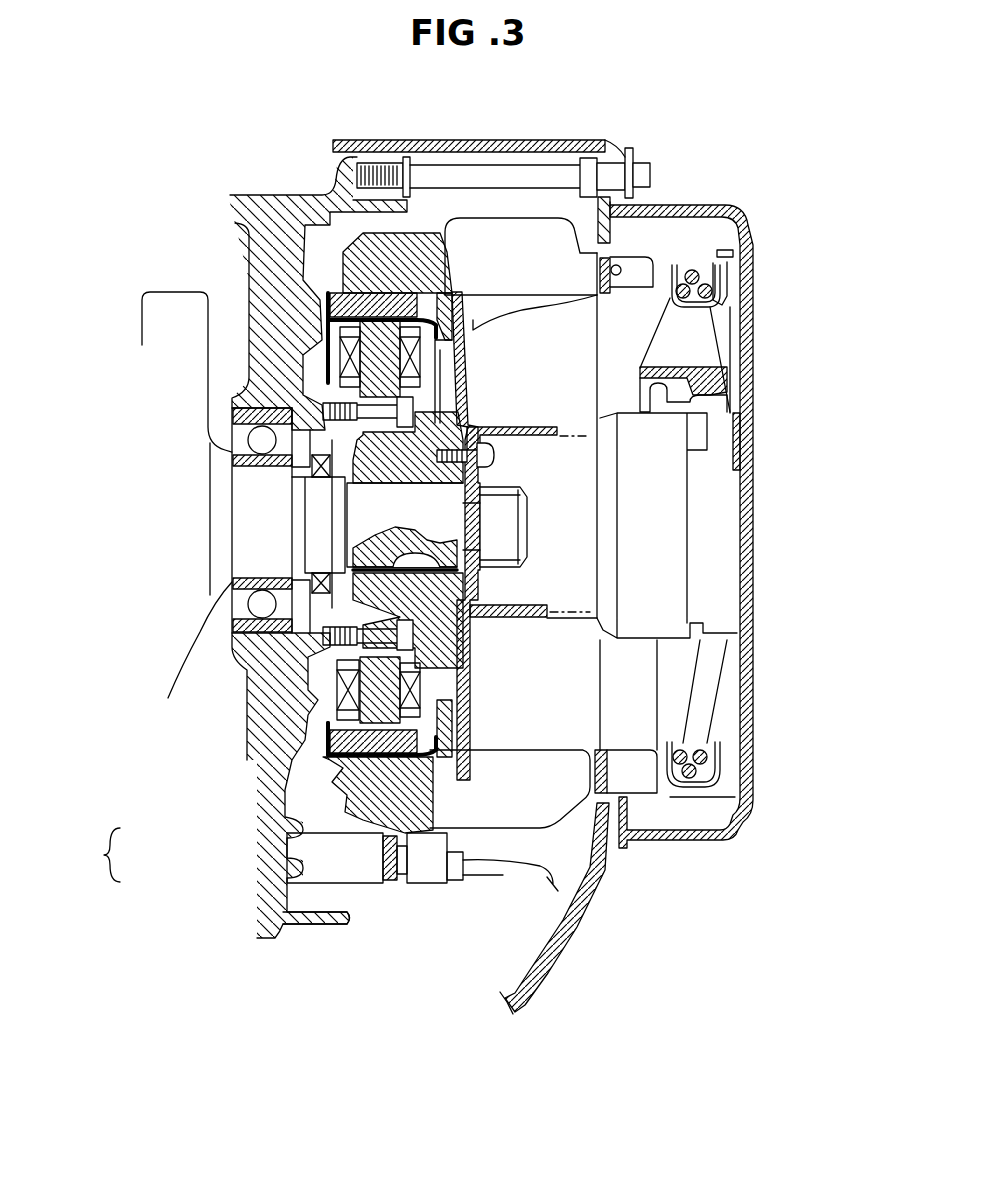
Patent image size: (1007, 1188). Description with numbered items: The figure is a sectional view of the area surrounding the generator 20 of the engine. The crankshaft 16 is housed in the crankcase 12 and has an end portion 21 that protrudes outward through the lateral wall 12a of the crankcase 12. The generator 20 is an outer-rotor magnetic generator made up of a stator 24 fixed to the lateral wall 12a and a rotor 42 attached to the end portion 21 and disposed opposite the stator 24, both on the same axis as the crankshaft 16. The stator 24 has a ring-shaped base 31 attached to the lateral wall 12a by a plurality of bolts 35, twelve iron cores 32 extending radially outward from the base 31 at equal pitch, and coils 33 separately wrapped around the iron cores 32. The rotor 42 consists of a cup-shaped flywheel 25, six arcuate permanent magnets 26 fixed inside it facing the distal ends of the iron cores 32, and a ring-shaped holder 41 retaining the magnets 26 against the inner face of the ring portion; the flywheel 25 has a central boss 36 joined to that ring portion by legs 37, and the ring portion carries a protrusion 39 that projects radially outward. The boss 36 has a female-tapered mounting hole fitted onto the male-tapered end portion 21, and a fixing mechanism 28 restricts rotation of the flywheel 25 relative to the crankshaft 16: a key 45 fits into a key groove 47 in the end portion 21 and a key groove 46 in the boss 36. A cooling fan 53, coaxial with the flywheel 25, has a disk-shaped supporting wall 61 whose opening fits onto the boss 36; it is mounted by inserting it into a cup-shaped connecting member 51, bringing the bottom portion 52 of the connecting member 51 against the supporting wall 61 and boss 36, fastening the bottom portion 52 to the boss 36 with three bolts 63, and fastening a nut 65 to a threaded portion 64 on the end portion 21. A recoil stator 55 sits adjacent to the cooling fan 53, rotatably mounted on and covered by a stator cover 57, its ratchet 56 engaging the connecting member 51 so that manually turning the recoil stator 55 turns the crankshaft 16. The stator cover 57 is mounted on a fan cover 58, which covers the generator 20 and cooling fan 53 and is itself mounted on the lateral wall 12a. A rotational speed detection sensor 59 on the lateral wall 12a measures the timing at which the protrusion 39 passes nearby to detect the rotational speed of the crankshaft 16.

The crankcase 12 is at (271, 962).
The lateral wall 12a is at (273, 880).
The crankshaft 16 is at (221, 528).
The generator 20 is at (97, 855).
The end portion 21 is at (388, 498).
The stator 24 is at (314, 752).
The flywheel 25 is at (418, 245).
The magnets 26 is at (383, 305).
The fixing mechanism 28 is at (378, 532).
The base 31 is at (473, 702).
The iron cores 32 is at (343, 340).
The coils 33 is at (343, 357).
The bolts 35 is at (343, 378).
The boss 36 is at (510, 490).
The legs 37 is at (480, 678).
The protrusion 39 is at (420, 860).
The holder 41 is at (343, 262).
The rotor 42 is at (322, 795).
The key 45 is at (355, 548).
The key groove 46 is at (480, 563).
The key groove 47 is at (528, 493).
The connecting member 51 is at (577, 435).
The bottom portion 52 is at (467, 623).
The cooling fan 53 is at (527, 245).
The recoil stator 55 is at (698, 333).
The ratchet 56 is at (710, 373).
The stator cover 57 is at (727, 207).
The fan cover 58 is at (585, 150).
The rotational speed detection sensor 59 is at (432, 875).
The supporting wall 61 is at (470, 650).
The bolts 63 is at (490, 442).
The threaded portion 64 is at (622, 512).
The nut 65 is at (615, 478).